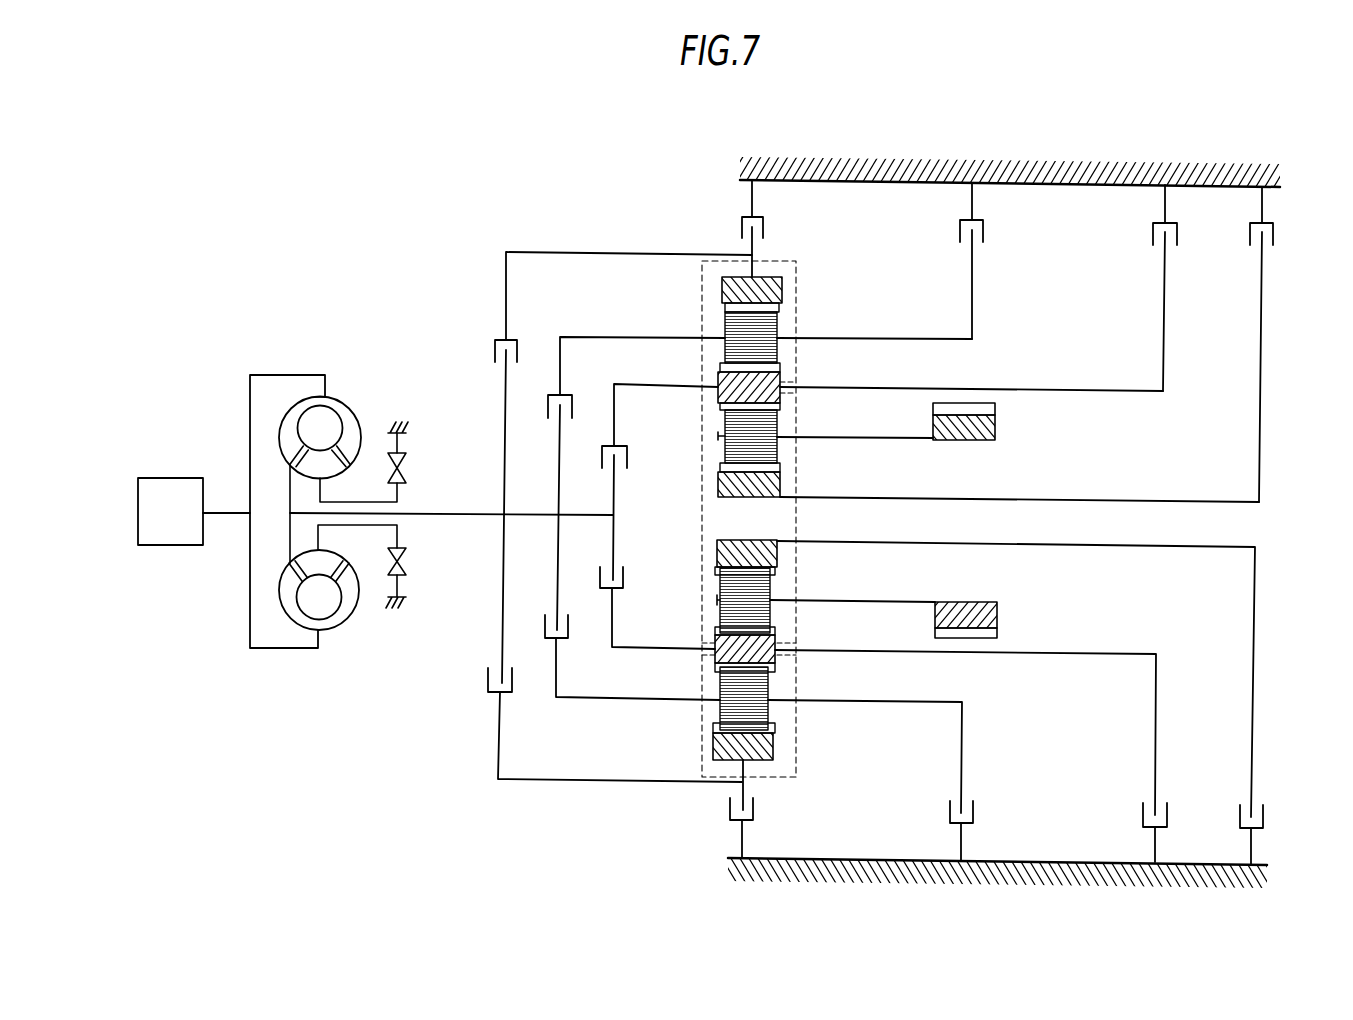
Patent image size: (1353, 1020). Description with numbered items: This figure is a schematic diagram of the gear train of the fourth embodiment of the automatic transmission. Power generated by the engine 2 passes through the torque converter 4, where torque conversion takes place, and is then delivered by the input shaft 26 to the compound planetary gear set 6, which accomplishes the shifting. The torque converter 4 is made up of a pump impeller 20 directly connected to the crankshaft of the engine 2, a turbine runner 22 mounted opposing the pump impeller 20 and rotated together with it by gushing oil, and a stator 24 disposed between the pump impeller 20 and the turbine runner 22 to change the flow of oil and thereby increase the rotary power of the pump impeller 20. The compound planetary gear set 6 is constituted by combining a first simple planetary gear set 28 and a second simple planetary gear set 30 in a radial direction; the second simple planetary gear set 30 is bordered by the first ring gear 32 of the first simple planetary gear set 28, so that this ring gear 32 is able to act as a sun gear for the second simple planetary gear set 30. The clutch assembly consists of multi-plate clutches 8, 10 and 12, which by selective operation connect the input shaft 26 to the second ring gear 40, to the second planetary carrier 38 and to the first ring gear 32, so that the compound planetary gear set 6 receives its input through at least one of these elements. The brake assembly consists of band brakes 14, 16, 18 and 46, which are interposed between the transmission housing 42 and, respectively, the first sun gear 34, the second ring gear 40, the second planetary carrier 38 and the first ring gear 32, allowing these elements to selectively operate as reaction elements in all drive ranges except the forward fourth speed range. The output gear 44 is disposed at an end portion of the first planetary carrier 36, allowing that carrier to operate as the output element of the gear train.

The engine 2 is at (172, 478).
The torque converter 4 is at (352, 372).
The compound planetary gear set 6 is at (862, 355).
The first clutch 8 is at (500, 338).
The second clutch 10 is at (552, 393).
The third clutch 12 is at (610, 443).
The first brake 14 is at (1278, 226).
The second brake 16 is at (762, 216).
The third brake 18 is at (980, 222).
The pump impeller 20 is at (340, 404).
The turbine runner 22 is at (300, 413).
The stator 24 is at (333, 467).
The input shaft 26 is at (437, 512).
The first simple planetary gear set 28 is at (800, 395).
The second simple planetary gear set 30 is at (800, 345).
The first ring gear 32 is at (716, 384).
The first sun gear 34 is at (716, 492).
The first planetary carrier 36 is at (835, 440).
The second planetary carrier 38 is at (874, 316).
The second ring gear 40 is at (782, 290).
The transmission housing 42 is at (1172, 167).
The output gear 44 is at (997, 633).
The fourth brake 46 is at (1175, 226).